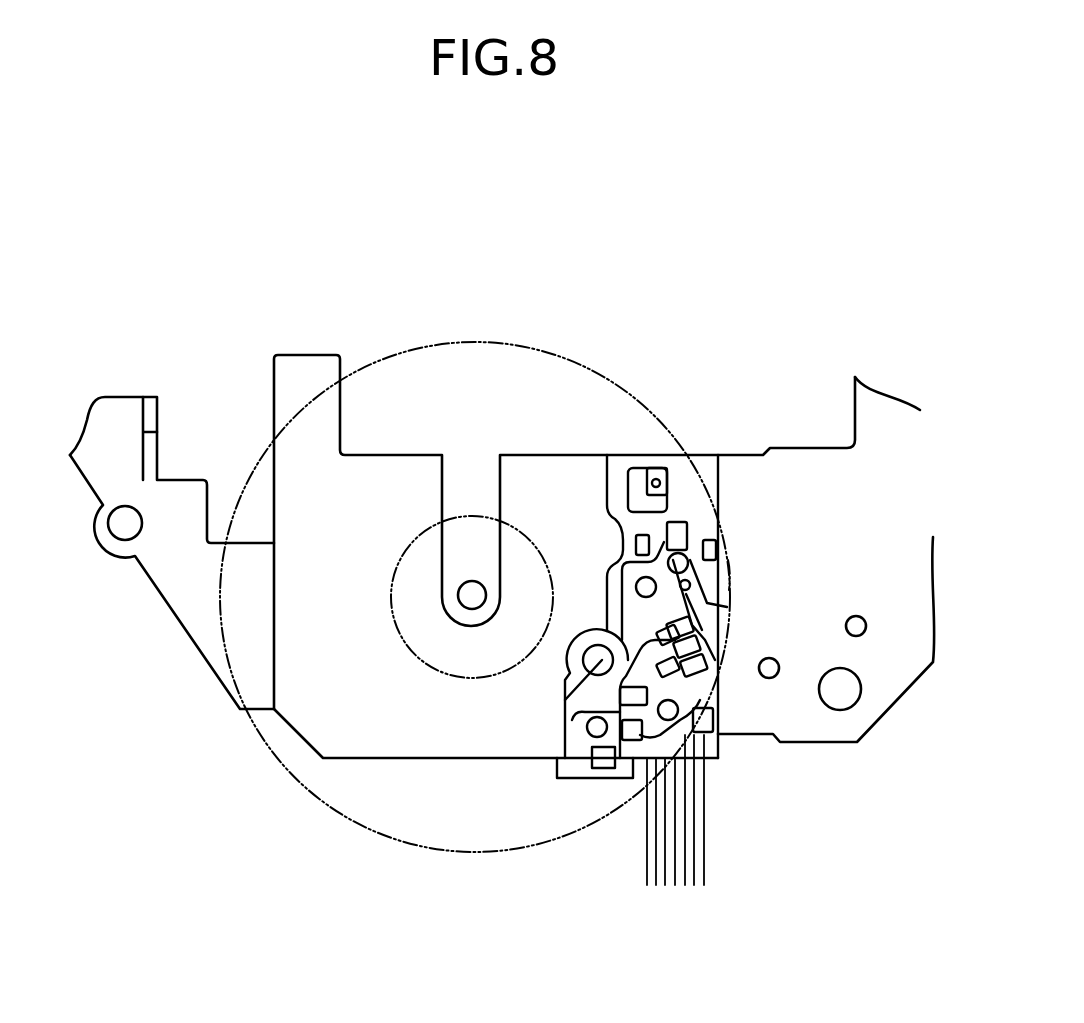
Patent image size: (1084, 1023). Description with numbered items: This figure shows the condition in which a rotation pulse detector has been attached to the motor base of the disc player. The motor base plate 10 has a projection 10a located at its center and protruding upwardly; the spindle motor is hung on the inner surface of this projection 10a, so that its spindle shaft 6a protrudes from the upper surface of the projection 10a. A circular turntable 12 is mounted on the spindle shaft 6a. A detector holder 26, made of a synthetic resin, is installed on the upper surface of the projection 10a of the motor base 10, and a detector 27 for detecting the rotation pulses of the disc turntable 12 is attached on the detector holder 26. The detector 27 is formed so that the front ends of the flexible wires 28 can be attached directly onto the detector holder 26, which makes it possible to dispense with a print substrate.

The motor base plate 10 is at (815, 492).
The projection 10a is at (450, 747).
The turntable 12 is at (490, 342).
The spindle shaft 6a is at (472, 600).
The detector holder 26 is at (686, 485).
The detector 27 is at (742, 571).
The flexible wires 28 is at (690, 817).